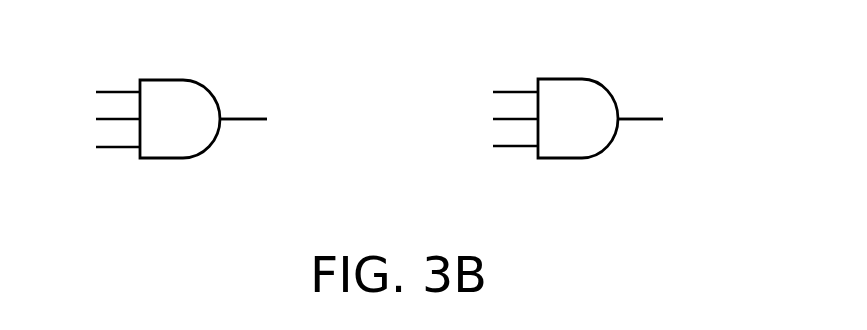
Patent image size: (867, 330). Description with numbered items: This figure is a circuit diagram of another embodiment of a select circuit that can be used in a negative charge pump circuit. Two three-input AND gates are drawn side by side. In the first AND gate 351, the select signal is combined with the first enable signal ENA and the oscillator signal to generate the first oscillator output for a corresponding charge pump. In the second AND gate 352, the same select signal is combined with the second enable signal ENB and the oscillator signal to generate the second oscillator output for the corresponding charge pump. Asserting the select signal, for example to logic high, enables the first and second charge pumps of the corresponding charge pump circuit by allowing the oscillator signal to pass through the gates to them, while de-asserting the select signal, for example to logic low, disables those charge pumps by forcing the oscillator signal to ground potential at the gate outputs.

The first AND gate 351 is at (172, 80).
The second AND gate 352 is at (565, 79).
The ENA signal ENA is at (86, 92).
The ENB signal ENB is at (483, 92).